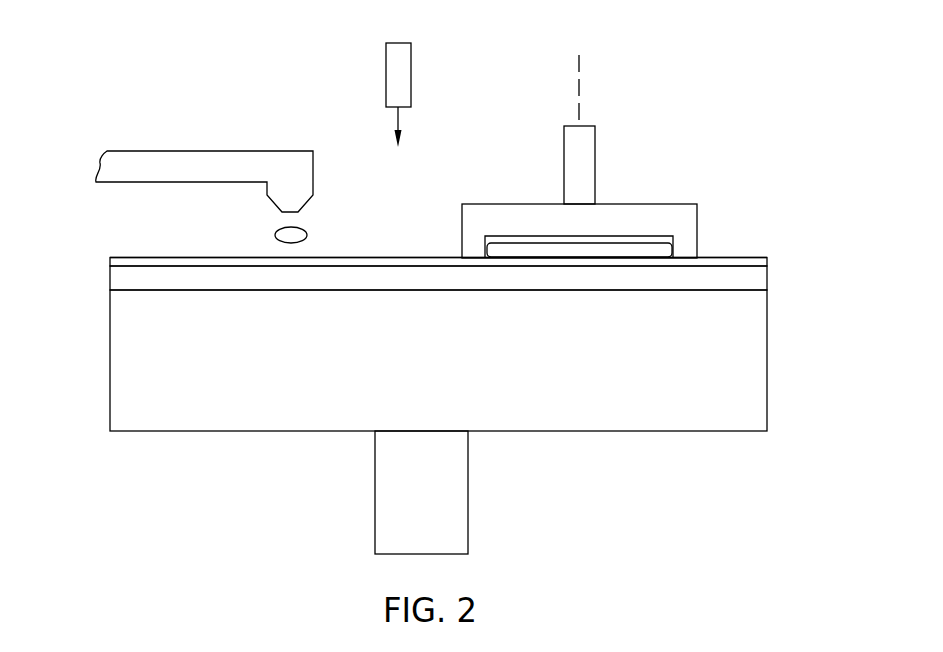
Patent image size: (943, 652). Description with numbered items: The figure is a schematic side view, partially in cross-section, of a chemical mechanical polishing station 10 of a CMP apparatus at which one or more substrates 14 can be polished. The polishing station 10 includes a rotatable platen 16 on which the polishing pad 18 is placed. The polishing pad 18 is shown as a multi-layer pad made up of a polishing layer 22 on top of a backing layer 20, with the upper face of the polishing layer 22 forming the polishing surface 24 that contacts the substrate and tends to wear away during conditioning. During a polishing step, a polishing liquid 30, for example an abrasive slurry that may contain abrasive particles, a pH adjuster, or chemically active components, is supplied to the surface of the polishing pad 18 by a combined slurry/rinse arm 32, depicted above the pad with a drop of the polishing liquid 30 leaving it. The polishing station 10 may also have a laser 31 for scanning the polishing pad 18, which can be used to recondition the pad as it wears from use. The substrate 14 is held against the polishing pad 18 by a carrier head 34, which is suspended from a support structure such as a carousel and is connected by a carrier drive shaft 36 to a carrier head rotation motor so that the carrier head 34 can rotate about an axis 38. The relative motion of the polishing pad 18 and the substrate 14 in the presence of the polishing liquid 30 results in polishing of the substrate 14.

The polishing station 10 is at (258, 116).
The substrate 14 is at (636, 243).
The rotatable platen 16 is at (769, 363).
The polishing pad 18 is at (444, 254).
The backing layer 20 is at (769, 282).
The polishing layer 22 is at (770, 261).
The polishing surface 24 is at (409, 257).
The polishing liquid 30 is at (305, 230).
The laser 31 is at (411, 80).
The slurry/rinse arm 32 is at (293, 151).
The carrier head 34 is at (680, 205).
The carrier drive shaft 36 is at (564, 162).
The axis 38 is at (579, 92).